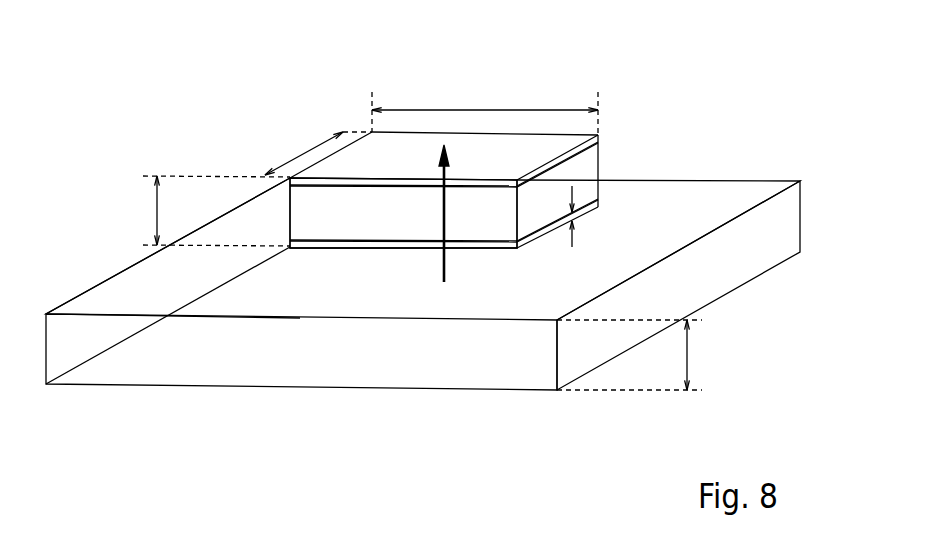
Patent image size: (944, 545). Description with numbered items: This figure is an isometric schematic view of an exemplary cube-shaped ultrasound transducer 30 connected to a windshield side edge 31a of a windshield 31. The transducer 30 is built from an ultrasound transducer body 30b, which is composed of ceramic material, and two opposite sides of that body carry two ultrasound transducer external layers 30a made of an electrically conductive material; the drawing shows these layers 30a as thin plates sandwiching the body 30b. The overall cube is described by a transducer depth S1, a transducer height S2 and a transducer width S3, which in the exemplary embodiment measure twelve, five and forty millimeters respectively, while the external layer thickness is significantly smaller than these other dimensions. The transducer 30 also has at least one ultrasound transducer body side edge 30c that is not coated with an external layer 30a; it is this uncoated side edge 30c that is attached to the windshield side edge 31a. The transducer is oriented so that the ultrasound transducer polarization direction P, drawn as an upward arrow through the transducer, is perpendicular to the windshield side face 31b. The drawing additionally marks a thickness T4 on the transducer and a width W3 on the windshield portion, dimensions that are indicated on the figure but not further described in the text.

The cube-shaped ultrasound transducer 30 is at (472, 240).
The ultrasound transducer external layer 30a is at (598, 137).
The ultrasound transducer body 30b is at (577, 172).
The ultrasound transducer body side edge 30c is at (405, 212).
The windshield 31 is at (434, 271).
The windshield side edge 31a is at (698, 208).
The windshield side face 31b is at (223, 298).
The ultrasound transducer polarization direction P is at (445, 213).
The transducer depth S1 is at (303, 152).
The transducer height S2 is at (157, 212).
The transducer width S3 is at (493, 107).
The thickness T4 is at (573, 230).
The width W3 is at (689, 358).